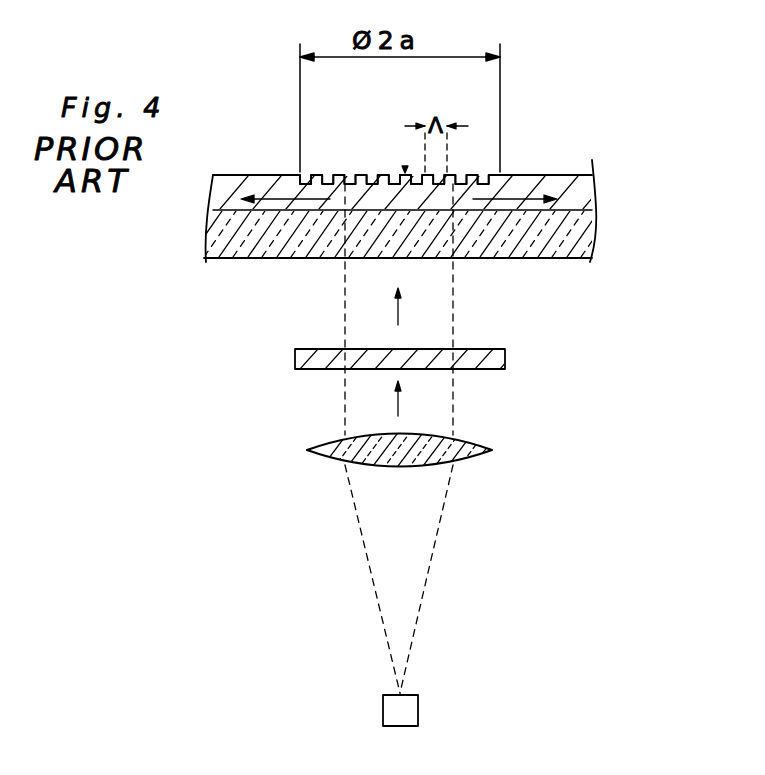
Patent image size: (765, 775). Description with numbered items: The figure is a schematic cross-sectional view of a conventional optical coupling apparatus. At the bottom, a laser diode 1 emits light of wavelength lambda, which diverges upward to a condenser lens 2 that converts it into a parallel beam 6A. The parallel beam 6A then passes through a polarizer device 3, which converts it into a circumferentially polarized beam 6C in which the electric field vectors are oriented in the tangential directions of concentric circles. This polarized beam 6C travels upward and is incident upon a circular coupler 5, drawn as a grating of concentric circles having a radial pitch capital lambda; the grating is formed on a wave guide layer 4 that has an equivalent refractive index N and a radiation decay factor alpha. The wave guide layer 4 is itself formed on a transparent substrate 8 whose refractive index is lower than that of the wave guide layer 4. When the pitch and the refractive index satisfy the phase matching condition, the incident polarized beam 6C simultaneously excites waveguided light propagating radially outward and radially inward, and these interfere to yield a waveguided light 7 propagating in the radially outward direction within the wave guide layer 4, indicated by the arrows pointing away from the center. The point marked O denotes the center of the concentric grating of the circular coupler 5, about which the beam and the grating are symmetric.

The laser diode 1 is at (408, 713).
The condenser lens 2 is at (470, 455).
The polarizer device 3 is at (505, 358).
The wave guide layer 4 is at (580, 176).
The circular coupler 5 is at (486, 174).
The parallel beam 6A is at (398, 409).
The circumferentially polarized beam 6C is at (398, 316).
The waveguided light 7 is at (297, 203).
The transparent substrate 8 is at (250, 258).
The center point O is at (405, 172).